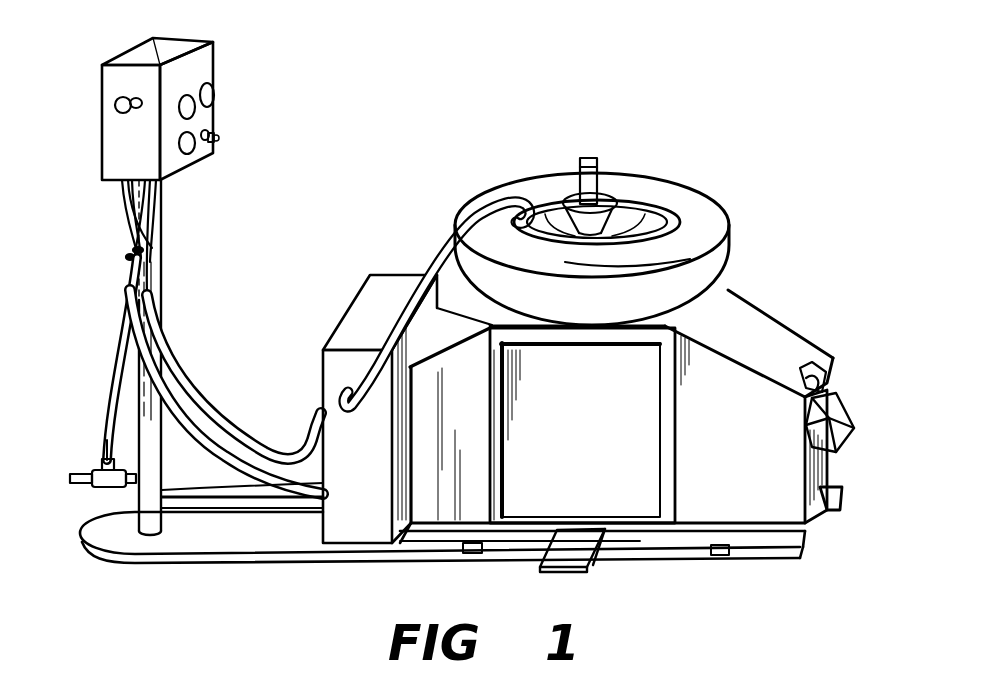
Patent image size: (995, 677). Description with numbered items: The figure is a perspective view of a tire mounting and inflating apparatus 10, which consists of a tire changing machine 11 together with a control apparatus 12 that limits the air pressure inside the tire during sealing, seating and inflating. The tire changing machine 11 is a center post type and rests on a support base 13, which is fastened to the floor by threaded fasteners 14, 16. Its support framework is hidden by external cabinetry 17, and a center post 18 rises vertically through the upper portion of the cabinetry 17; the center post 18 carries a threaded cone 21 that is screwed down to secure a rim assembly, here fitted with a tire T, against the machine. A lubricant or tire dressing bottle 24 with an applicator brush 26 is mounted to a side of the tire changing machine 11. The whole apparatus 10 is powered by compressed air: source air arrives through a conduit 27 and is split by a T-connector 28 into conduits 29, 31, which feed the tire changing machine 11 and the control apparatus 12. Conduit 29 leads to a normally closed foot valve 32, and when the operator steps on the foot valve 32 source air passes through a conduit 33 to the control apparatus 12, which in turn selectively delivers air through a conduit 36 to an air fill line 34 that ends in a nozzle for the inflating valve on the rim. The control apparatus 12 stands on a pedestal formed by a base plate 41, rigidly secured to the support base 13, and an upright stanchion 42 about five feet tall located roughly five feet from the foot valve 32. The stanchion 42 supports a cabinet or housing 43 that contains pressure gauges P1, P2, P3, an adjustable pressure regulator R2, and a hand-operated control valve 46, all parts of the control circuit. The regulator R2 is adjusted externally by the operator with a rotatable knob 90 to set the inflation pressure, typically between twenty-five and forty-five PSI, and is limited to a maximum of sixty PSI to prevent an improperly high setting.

The tire mounting and inflating apparatus 10 is at (459, 94).
The tire changing machine 11 is at (750, 278).
The control apparatus 12 is at (186, 255).
The support base 13 is at (788, 560).
The threaded fastener 14 is at (712, 558).
The threaded fastener 16 is at (478, 556).
The external cabinetry 17 is at (758, 460).
The center post 18 is at (593, 163).
The threaded cone 21 is at (602, 230).
The lubricant bottle or tire dressing bottle 24 is at (844, 420).
The applicator brush 26 is at (816, 365).
The conduit 27 is at (100, 466).
The T-connector 28 is at (100, 488).
The conduit 29 is at (201, 470).
The conduit 31 is at (118, 400).
The foot valve 32 is at (585, 550).
The conduit 33 is at (188, 426).
The air fill line 34 is at (432, 265).
The conduit 36 is at (184, 380).
The base plate 41 is at (270, 548).
The upright stanchion 42 is at (151, 537).
The cabinet or housing 43 is at (117, 165).
The hand-operated control valve 46 is at (123, 96).
The rotatable knob 90 is at (215, 141).
The pressure gauge P1 is at (213, 92).
The pressure gauge P2 is at (194, 96).
The pressure gauge P3 is at (191, 153).
The adjustable pressure regulator R2 is at (226, 127).
The tire T is at (704, 200).